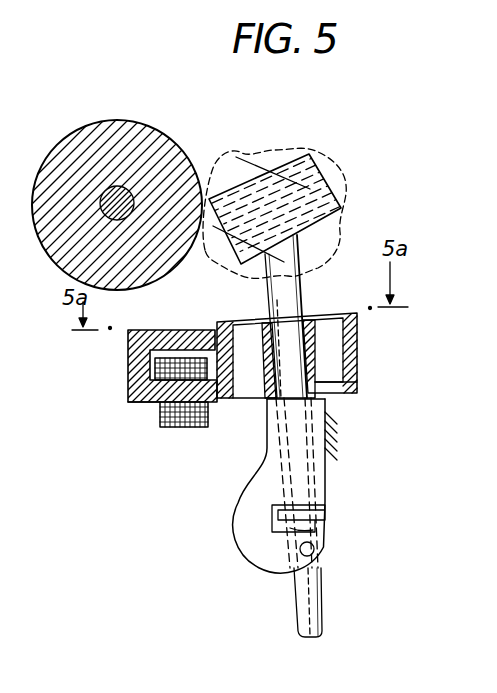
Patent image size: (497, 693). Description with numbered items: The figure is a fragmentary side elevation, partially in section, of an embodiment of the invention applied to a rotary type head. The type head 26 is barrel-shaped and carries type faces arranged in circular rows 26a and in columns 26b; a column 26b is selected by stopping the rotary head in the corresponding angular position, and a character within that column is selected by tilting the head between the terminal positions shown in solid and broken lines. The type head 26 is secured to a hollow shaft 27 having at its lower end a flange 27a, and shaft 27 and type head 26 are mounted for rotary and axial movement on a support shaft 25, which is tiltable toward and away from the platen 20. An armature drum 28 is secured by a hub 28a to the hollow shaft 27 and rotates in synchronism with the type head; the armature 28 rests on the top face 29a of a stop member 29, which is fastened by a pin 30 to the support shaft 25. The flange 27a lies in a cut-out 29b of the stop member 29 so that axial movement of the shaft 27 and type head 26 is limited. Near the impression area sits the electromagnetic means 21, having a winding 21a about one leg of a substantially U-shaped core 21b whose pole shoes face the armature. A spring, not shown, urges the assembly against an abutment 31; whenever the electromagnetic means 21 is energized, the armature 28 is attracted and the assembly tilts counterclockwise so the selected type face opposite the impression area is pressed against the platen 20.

The platen 20 is at (148, 130).
The electromagnetic means 21 is at (132, 375).
The winding 21a is at (188, 418).
The core 21b is at (132, 407).
The support shaft 25 is at (322, 623).
The type head 26 is at (287, 168).
The circular rows of type faces 26a is at (322, 153).
The columns of type faces 26b is at (229, 262).
The hollow shaft 27 is at (304, 292).
The flange 27a is at (263, 300).
The armature drum 28 is at (357, 352).
The hub 28a is at (350, 378).
The stop member 29 is at (325, 488).
The top face 29a is at (323, 402).
The cut-out 29b is at (313, 530).
The pin 30 is at (314, 553).
The abutment 31 is at (337, 436).